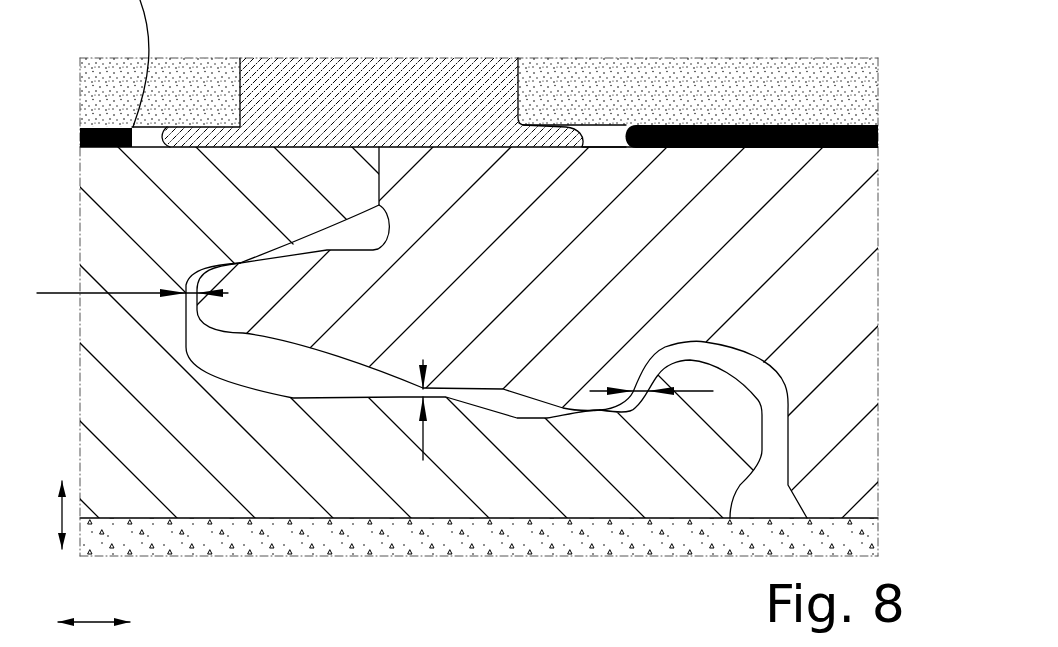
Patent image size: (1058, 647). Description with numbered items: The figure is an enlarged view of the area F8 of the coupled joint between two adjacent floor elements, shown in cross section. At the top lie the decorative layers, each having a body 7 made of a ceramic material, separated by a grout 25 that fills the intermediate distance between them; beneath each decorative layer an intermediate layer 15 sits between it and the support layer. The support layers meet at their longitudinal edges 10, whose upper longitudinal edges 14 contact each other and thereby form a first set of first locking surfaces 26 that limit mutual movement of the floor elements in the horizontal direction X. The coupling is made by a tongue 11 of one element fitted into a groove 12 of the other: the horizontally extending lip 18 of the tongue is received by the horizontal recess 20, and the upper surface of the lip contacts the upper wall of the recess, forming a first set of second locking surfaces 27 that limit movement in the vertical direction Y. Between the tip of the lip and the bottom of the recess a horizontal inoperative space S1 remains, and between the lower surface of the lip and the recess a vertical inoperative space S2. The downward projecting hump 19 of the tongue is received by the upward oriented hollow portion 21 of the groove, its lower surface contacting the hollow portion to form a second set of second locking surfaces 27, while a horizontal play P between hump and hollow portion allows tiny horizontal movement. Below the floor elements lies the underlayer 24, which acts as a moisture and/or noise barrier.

The body 7 is at (117, 72).
The longitudinal edge 10 is at (387, 5).
The tongue 11 is at (520, 160).
The groove 12 is at (347, 388).
The upper longitudinal edge 14 is at (352, 147).
The intermediate layer 15 is at (82, 128).
The horizontally extending lip 18 is at (233, 266).
The downward projecting hump 19 is at (604, 376).
The horizontal recess 20 is at (610, 133).
The upward oriented hollow portion 21 is at (550, 418).
The underlayer 24 is at (862, 538).
The grout 25 is at (273, 100).
The first locking surfaces 26 is at (379, 165).
The second locking surfaces 27 is at (186, 277).
The horizontal play P is at (705, 392).
The horizontal inoperative space S1 is at (72, 293).
The vertical inoperative space S2 is at (423, 460).
The area F8 is at (463, 7).
The horizontal direction X is at (93, 622).
The vertical direction Y is at (62, 513).